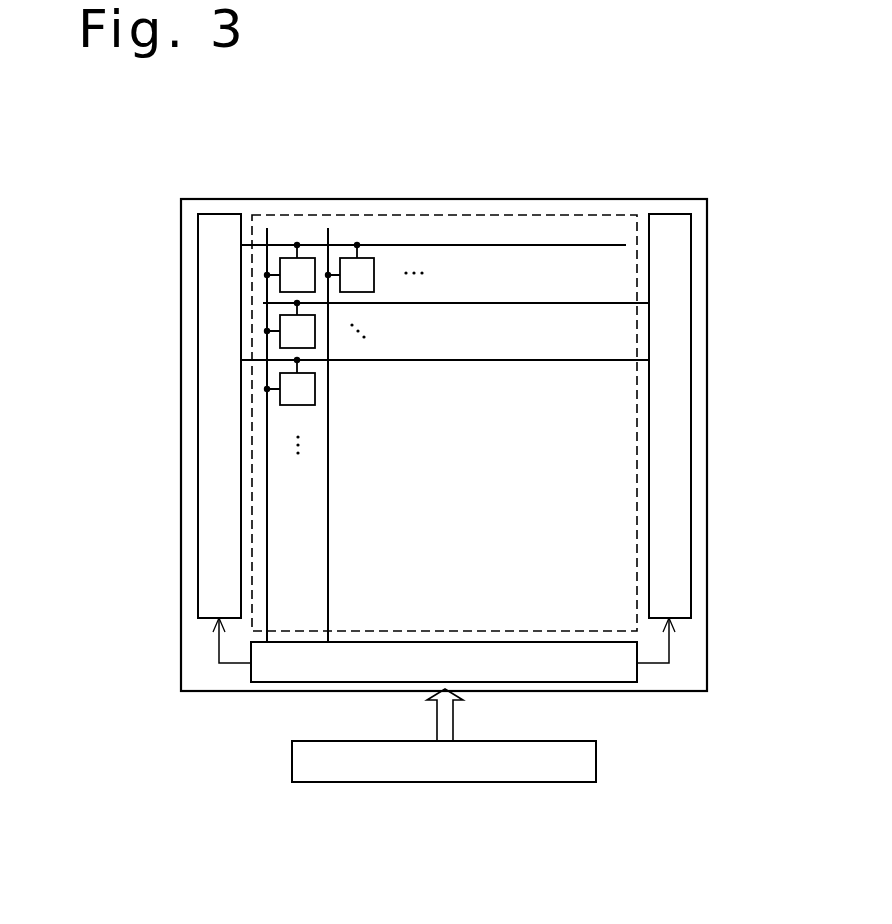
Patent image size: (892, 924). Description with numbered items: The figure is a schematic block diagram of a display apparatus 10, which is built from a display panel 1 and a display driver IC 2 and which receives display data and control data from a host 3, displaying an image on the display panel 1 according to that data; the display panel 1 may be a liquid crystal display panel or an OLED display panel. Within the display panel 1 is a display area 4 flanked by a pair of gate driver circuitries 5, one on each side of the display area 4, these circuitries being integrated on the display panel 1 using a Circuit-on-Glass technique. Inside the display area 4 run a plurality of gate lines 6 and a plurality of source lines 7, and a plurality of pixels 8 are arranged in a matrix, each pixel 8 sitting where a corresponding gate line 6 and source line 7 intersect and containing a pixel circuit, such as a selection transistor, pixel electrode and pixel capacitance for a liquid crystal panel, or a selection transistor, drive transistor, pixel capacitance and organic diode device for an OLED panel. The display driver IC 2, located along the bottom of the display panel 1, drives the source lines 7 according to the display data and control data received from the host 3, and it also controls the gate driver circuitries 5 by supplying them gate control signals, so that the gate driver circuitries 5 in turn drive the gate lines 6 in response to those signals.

The display apparatus 10 is at (486, 402).
The display panel 1 is at (612, 199).
The display driver IC 2 is at (632, 683).
The host 3 is at (596, 758).
The display area 4 is at (318, 215).
The gate driver circuitries 5 is at (228, 214).
The gate lines 6 is at (468, 245).
The source lines 7 is at (267, 524).
The pixels 8 is at (305, 288).